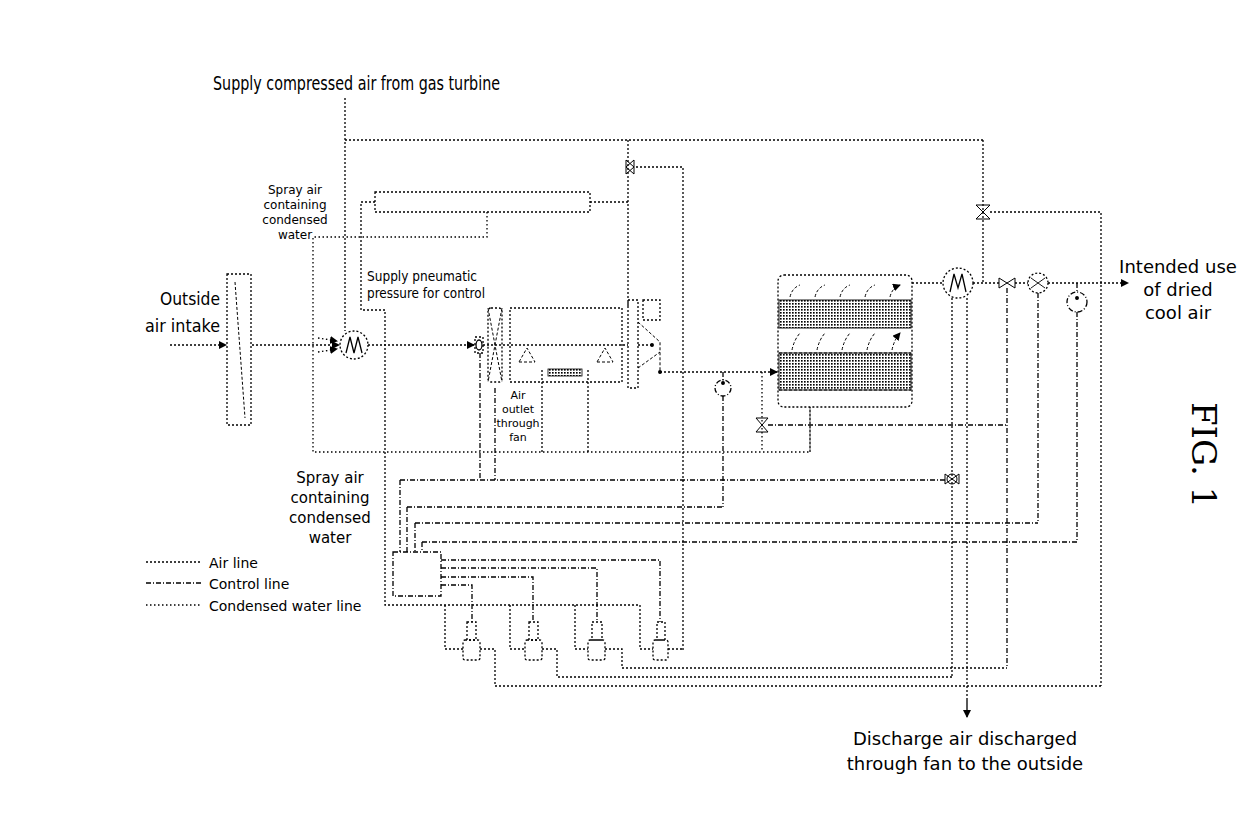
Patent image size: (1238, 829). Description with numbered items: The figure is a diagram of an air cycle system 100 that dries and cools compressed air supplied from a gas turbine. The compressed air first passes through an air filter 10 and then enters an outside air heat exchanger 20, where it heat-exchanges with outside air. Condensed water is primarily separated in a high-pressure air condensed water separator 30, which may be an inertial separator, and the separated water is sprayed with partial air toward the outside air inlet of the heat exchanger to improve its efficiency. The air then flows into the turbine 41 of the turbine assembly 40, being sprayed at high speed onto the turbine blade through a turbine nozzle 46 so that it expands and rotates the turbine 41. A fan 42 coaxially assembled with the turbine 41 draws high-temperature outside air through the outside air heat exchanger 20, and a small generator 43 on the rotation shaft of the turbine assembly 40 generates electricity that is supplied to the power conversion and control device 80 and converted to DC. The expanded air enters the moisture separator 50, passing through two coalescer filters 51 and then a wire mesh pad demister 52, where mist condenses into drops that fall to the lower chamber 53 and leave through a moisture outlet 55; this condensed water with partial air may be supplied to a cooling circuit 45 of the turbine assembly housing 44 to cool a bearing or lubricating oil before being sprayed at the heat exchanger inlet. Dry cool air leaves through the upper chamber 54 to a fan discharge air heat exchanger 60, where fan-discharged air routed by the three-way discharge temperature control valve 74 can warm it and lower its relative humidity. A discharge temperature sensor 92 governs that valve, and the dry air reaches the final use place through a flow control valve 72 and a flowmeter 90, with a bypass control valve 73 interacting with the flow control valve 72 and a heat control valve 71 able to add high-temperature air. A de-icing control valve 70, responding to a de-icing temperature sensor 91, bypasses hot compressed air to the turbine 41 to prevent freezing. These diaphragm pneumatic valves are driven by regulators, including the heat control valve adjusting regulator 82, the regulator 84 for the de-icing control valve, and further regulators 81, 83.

The air cycle system 100 is at (664, 203).
The air filter 10 is at (241, 274).
The outside air heat exchanger 20 is at (349, 358).
The high-pressure air condensed water separator 30 is at (482, 192).
The turbine assembly 40 is at (556, 296).
The turbine 41 is at (644, 373).
The fan 42 is at (494, 307).
The generator 43 is at (475, 338).
The turbine assembly housing 44 is at (570, 310).
The cooling circuit 45 is at (580, 378).
The turbine nozzle 46 is at (640, 307).
The moisture separator 50 is at (838, 345).
The coalescer filter 51 is at (905, 374).
The wire mesh pad demister 52 is at (908, 300).
The lower chamber 53 is at (910, 338).
The upper chamber 54 is at (782, 282).
The moisture outlet 55 is at (812, 410).
The fan discharge air heat exchanger 60 is at (955, 268).
The de-icing control valve 70 is at (626, 164).
The heat control valve 71 is at (979, 205).
The flow control valve 72 is at (1004, 278).
The bypass control valve 73 is at (758, 421).
The discharge temperature control valve 74 is at (947, 476).
The power conversion and control device 80 is at (410, 598).
The pneumatic valve 81 is at (466, 661).
The heat control valve adjusting regulator 82 is at (529, 661).
The pneumatic valve 83 is at (589, 661).
The regulator for the de-icing control valve 84 is at (654, 661).
The flowmeter 90 is at (1035, 272).
The de-icing temperature sensor 91 is at (716, 393).
The discharge temperature sensor 92 is at (1069, 309).